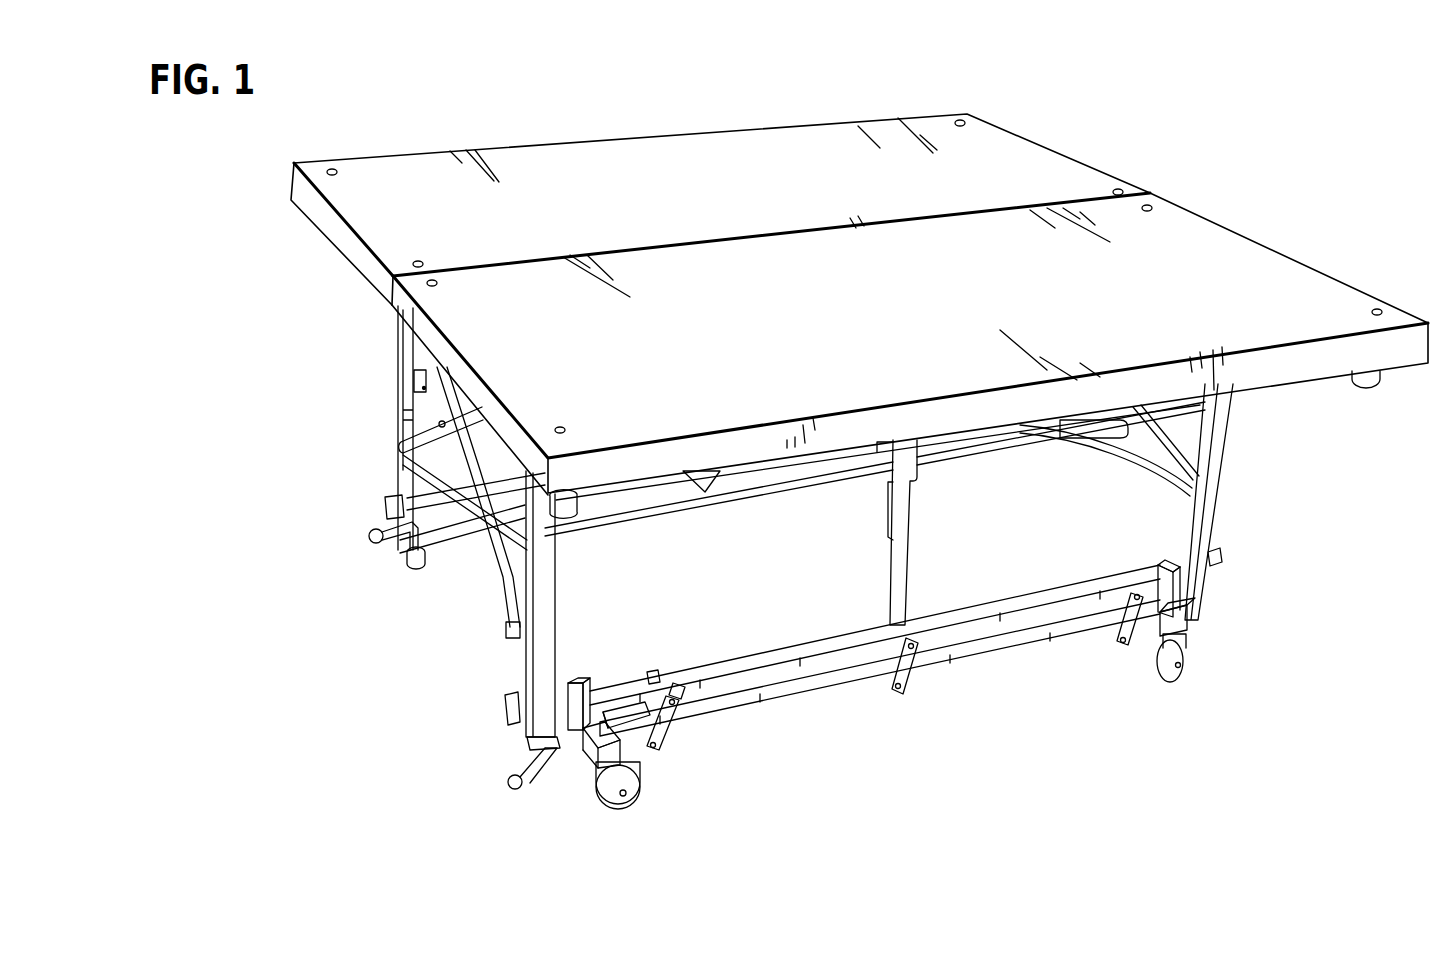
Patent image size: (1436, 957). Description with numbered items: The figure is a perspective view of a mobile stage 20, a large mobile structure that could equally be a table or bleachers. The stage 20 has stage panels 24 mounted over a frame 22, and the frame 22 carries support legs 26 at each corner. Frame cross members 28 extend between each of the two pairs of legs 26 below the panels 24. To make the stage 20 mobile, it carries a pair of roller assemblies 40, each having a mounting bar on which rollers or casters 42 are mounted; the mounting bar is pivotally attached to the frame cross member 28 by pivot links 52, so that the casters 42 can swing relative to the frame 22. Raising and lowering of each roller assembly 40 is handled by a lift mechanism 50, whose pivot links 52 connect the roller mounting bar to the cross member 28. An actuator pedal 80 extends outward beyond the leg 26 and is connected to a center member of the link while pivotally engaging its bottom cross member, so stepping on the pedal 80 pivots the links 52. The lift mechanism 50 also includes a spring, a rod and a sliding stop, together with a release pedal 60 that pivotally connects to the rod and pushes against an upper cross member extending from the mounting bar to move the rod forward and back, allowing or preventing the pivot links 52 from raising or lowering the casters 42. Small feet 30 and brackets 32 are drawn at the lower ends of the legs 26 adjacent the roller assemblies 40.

The mobile stage 20 is at (1255, 108).
The frame 22 is at (700, 525).
The stage panels 24 is at (711, 203).
The support legs 26 is at (526, 656).
The frame cross member 28 is at (785, 655).
The foot 30 is at (400, 560).
The bracket 32 is at (388, 500).
The roller assembly 40 is at (925, 745).
The rollers or casters 42 is at (642, 788).
The lift mechanism 50 is at (350, 507).
The pivot links 52 is at (660, 752).
The release pedal 60 is at (570, 680).
The actuator pedal 80 is at (368, 535).